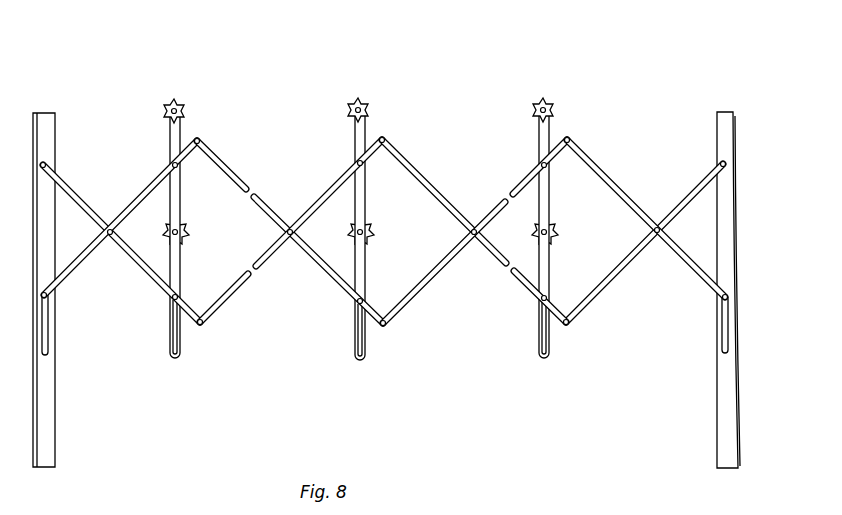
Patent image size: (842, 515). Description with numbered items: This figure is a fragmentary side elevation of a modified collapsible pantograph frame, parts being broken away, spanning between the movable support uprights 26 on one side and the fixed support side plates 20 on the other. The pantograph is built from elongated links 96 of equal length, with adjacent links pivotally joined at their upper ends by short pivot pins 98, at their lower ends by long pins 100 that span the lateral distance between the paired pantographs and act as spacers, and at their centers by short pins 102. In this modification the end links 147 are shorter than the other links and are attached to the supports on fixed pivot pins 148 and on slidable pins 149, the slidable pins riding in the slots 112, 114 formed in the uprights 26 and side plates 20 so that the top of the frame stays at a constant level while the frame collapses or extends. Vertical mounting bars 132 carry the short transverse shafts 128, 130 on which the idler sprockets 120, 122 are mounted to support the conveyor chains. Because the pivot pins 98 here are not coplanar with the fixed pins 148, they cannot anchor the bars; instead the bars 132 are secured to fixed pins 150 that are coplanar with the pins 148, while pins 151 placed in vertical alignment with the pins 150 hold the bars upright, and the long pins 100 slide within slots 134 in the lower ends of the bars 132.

The fixed support side plates 20 is at (725, 370).
The movable support uprights 26 is at (44, 376).
The elongated links 96 is at (318, 258).
The short pivot pins 98 is at (201, 140).
The long pins 100 is at (204, 326).
The short pins 102 is at (290, 229).
The slots 112 is at (52, 334).
The slots 114 is at (721, 338).
The idler sprockets 120 is at (186, 107).
The idler sprockets 122 is at (187, 231).
The short transverse shafts 128 is at (162, 112).
The short transverse shafts 130 is at (180, 228).
The vertical mounting bars 132 is at (175, 200).
The slots 134 is at (169, 343).
The end links 147 is at (98, 216).
The fixed pivot pins 148 is at (46, 163).
The slidable pins 149 is at (48, 296).
The fixed pins 150 is at (172, 164).
The pins 151 is at (179, 294).